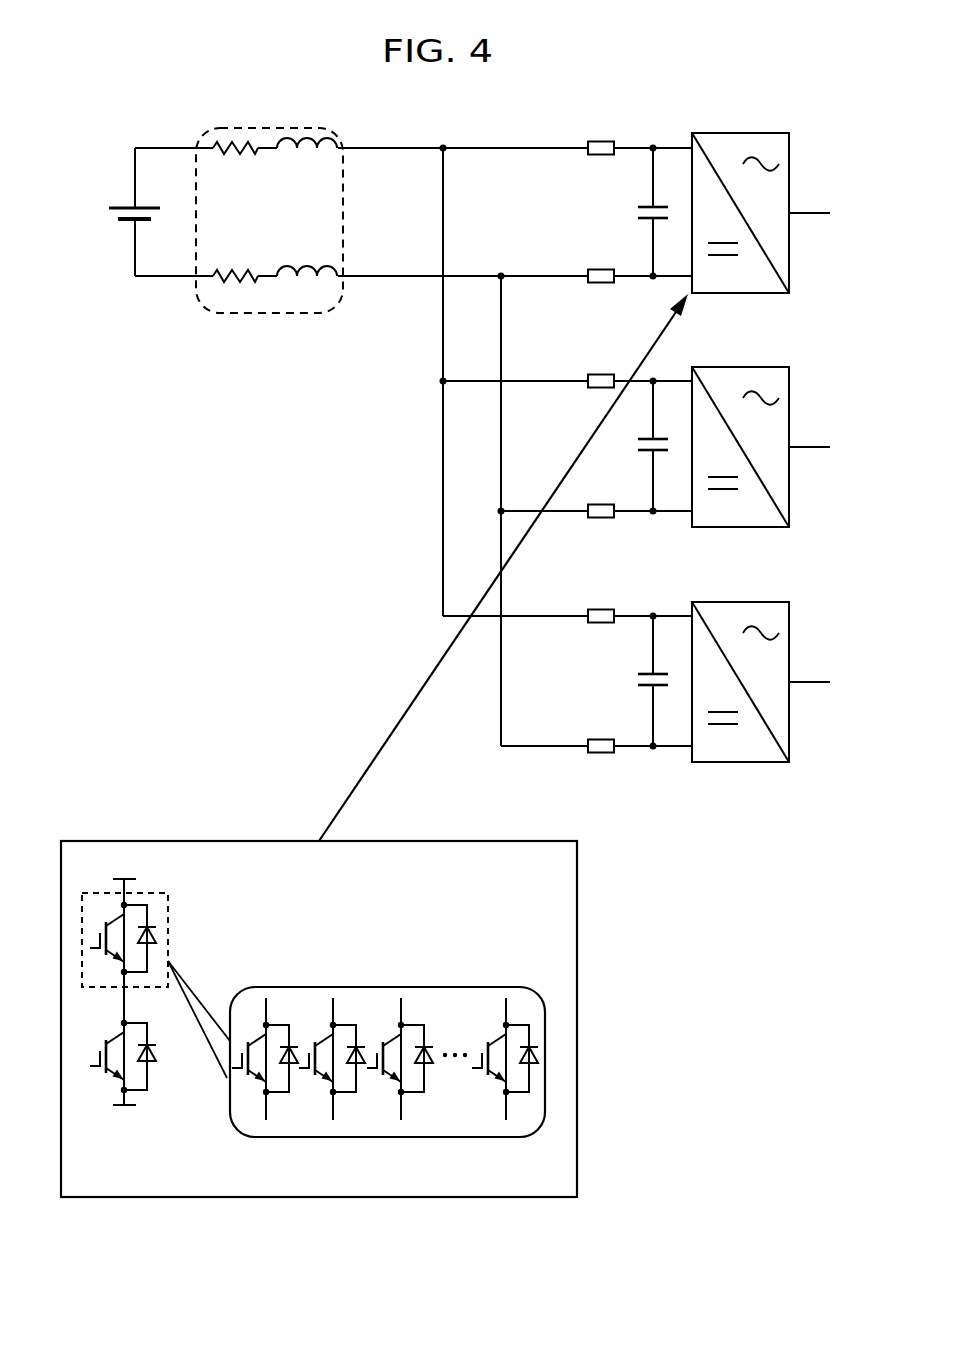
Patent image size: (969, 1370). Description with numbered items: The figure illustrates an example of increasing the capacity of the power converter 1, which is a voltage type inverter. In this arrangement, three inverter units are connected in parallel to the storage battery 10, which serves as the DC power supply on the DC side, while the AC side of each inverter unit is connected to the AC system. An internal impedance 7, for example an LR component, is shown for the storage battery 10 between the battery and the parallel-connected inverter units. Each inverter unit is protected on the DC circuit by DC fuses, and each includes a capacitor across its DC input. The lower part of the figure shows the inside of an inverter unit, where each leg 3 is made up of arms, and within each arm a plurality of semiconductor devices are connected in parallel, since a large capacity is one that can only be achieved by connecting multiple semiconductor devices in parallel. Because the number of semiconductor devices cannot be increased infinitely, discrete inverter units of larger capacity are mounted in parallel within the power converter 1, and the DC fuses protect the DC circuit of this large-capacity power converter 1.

The power converter 1 is at (705, 102).
The leg 3 is at (144, 1116).
The internal impedance 7 is at (266, 314).
The storage battery 10 is at (112, 216).